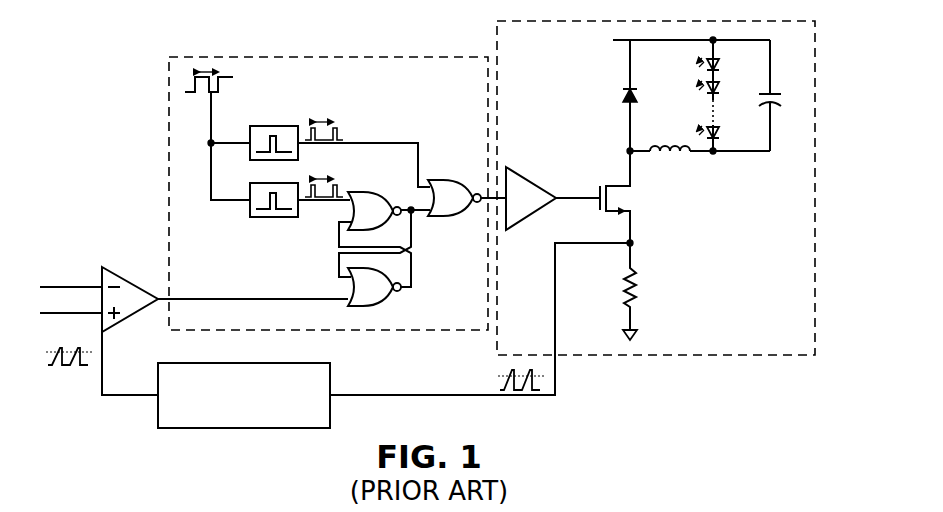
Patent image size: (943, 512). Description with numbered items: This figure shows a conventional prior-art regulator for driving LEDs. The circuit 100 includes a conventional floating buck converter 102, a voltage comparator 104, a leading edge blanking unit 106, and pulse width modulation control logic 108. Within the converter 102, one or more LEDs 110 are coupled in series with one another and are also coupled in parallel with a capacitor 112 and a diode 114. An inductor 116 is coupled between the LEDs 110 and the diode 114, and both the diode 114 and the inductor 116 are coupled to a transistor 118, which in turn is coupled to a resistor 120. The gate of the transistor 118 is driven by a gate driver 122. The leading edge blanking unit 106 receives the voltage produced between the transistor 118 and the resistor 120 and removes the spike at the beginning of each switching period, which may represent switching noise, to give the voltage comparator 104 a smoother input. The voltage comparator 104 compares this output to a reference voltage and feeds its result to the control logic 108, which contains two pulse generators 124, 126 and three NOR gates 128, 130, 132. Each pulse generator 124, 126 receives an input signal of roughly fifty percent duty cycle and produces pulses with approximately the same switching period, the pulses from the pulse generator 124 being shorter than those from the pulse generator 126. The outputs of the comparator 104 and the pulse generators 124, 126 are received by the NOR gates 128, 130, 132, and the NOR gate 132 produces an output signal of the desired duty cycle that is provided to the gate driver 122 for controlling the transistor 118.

The circuit 100 is at (133, 50).
The floating buck converter 102 is at (801, 339).
The voltage comparator 104 is at (132, 280).
The leading edge blanking unit 106 is at (158, 410).
The pulse width modulation (PWM) control logic 108 is at (478, 86).
The LEDs 110 is at (716, 142).
The capacitor 112 is at (779, 101).
The diode 114 is at (624, 100).
The inductor 116 is at (662, 145).
The transistor 118 is at (620, 200).
The resistor 120 is at (638, 290).
The gate driver 122 is at (534, 186).
The pulse generator 124 is at (286, 126).
The pulse generator 126 is at (272, 218).
The NOR gate 128 is at (381, 193).
The NOR gate 130 is at (395, 294).
The NOR gate 132 is at (444, 180).